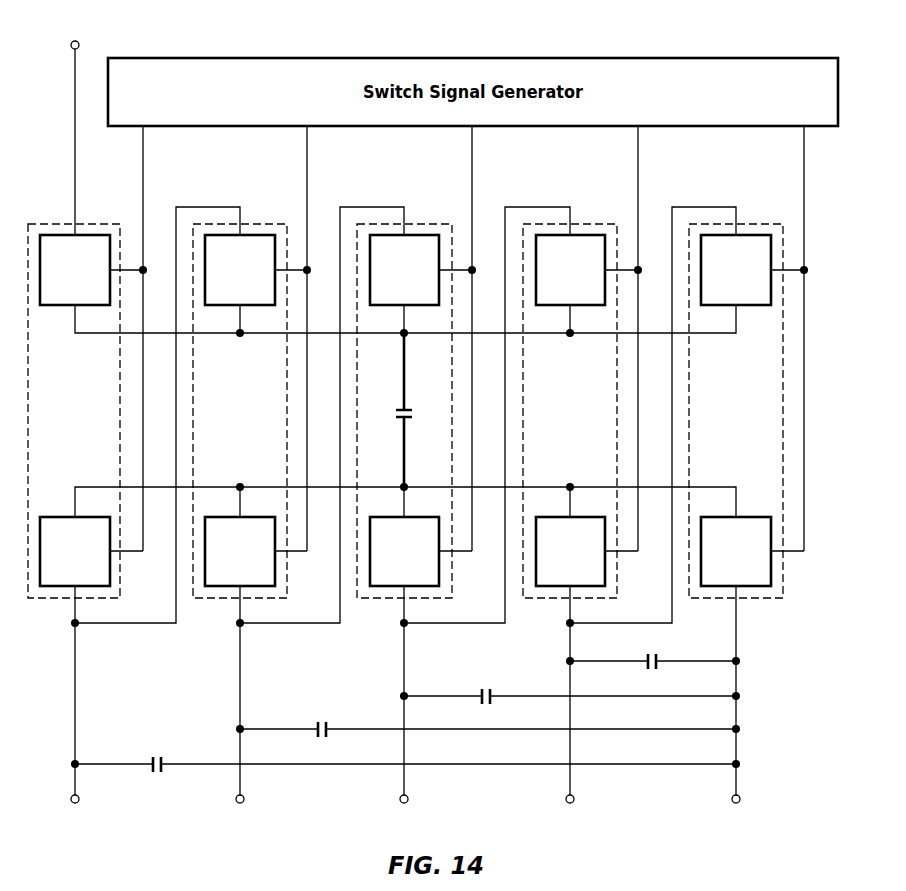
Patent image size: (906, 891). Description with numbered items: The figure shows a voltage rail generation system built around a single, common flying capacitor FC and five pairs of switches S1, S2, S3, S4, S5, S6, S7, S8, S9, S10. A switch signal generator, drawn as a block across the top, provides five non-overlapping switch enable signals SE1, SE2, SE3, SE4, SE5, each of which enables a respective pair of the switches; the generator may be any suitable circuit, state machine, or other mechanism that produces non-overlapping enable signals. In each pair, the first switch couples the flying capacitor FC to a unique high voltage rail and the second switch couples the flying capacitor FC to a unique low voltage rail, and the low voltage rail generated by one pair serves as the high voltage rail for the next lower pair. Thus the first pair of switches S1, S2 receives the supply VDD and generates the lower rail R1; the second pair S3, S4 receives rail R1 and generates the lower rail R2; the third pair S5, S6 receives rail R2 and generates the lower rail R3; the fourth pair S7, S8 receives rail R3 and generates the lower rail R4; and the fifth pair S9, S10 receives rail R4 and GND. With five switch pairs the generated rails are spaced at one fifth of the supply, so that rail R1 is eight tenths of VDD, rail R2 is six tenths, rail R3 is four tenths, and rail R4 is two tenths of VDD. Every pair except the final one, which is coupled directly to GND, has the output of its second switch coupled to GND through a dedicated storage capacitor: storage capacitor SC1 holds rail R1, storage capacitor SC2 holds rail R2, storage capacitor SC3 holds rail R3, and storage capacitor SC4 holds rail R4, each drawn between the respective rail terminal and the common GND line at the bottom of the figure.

The supply voltage VDD is at (75, 128).
The ground GND is at (736, 707).
The switch enable signal SE1 is at (161, 338).
The switch enable signal SE2 is at (325, 338).
The switch enable signal SE3 is at (490, 338).
The switch enable signal SE4 is at (656, 338).
The switch enable signal SE5 is at (822, 338).
The switch S1 is at (75, 270).
The switch S2 is at (75, 551).
The switch S3 is at (240, 270).
The switch S4 is at (240, 551).
The switch S5 is at (404, 270).
The switch S6 is at (404, 551).
The switch S7 is at (570, 270).
The switch S8 is at (570, 551).
The switch S9 is at (736, 270).
The switch S10 is at (736, 551).
The flying capacitor FC is at (414, 410).
The storage capacitor SC1 is at (405, 754).
The storage capacitor SC2 is at (488, 719).
The storage capacitor SC3 is at (570, 686).
The storage capacitor SC4 is at (653, 652).
The rail R1 is at (75, 707).
The rail R2 is at (240, 707).
The rail R3 is at (404, 707).
The rail R4 is at (570, 707).